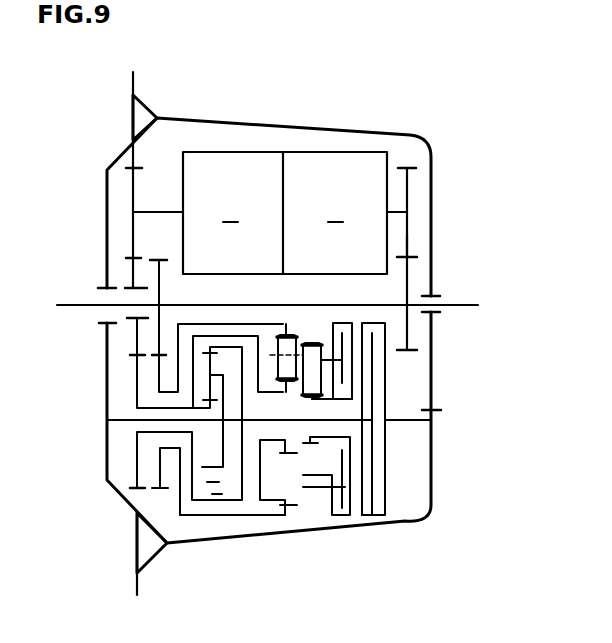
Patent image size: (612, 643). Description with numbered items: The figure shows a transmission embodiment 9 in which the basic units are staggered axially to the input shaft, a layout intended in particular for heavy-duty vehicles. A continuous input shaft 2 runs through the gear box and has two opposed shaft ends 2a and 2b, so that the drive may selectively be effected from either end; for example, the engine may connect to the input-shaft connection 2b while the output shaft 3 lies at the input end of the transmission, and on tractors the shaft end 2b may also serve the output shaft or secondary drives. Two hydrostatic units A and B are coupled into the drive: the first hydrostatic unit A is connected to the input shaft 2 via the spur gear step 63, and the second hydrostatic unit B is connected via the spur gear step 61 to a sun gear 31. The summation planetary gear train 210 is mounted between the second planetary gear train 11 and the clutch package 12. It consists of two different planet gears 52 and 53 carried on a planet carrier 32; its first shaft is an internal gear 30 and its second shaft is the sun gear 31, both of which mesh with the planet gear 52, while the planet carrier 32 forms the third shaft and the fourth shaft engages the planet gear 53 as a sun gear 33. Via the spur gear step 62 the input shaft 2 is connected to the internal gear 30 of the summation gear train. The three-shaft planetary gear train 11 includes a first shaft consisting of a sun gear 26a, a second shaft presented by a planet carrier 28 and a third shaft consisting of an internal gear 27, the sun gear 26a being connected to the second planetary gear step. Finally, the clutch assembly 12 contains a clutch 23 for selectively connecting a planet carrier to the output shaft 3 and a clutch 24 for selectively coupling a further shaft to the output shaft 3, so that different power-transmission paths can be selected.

The input shaft 2 is at (227, 300).
The shaft end 2a is at (78, 303).
The shaft end 2b is at (464, 303).
The output shaft 3 is at (443, 420).
The FIG. 9 embodiment 9 is at (287, 118).
The three-shaft planetary gear train 11 is at (233, 548).
The clutch assembly 12 is at (382, 545).
The clutch 23 is at (342, 510).
The clutch 24 is at (357, 473).
The sun gear 26a is at (213, 442).
The internal gear 27 is at (216, 485).
The planet carrier 28 is at (213, 468).
The internal gear 30 is at (283, 322).
The sun gear 31 is at (308, 400).
The planet carrier 32 is at (343, 356).
The sun gear 33 is at (282, 395).
The planet gear 52 is at (292, 343).
The planet gear 53 is at (312, 382).
The spur gear step 61 is at (72, 363).
The spur gear step 62 is at (137, 390).
The spur gear step 63 is at (407, 235).
The summation planetary gear train 210 is at (303, 550).